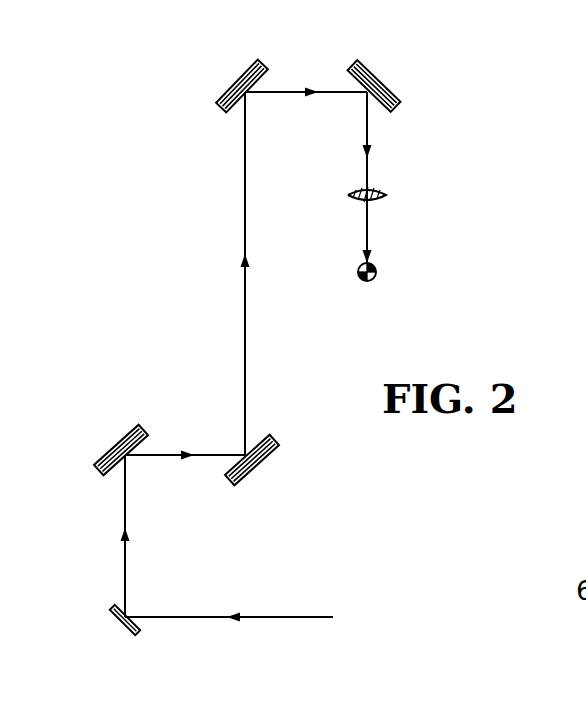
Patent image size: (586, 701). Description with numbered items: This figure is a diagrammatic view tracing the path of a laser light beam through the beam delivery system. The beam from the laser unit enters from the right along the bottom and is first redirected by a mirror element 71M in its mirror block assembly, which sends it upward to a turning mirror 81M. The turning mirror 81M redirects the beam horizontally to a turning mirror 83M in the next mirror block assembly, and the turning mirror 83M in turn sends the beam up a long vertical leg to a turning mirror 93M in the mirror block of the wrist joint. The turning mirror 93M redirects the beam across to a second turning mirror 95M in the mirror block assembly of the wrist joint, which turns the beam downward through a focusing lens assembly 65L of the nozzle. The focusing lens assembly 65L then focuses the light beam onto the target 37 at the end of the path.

The mirror element 71M is at (112, 620).
The turning mirror 81M is at (116, 437).
The turning mirror 83M is at (262, 467).
The turning mirror 93M is at (237, 79).
The second turning mirror 95M is at (400, 90).
The focusing lens assembly 65L is at (386, 194).
The target 37 is at (378, 273).